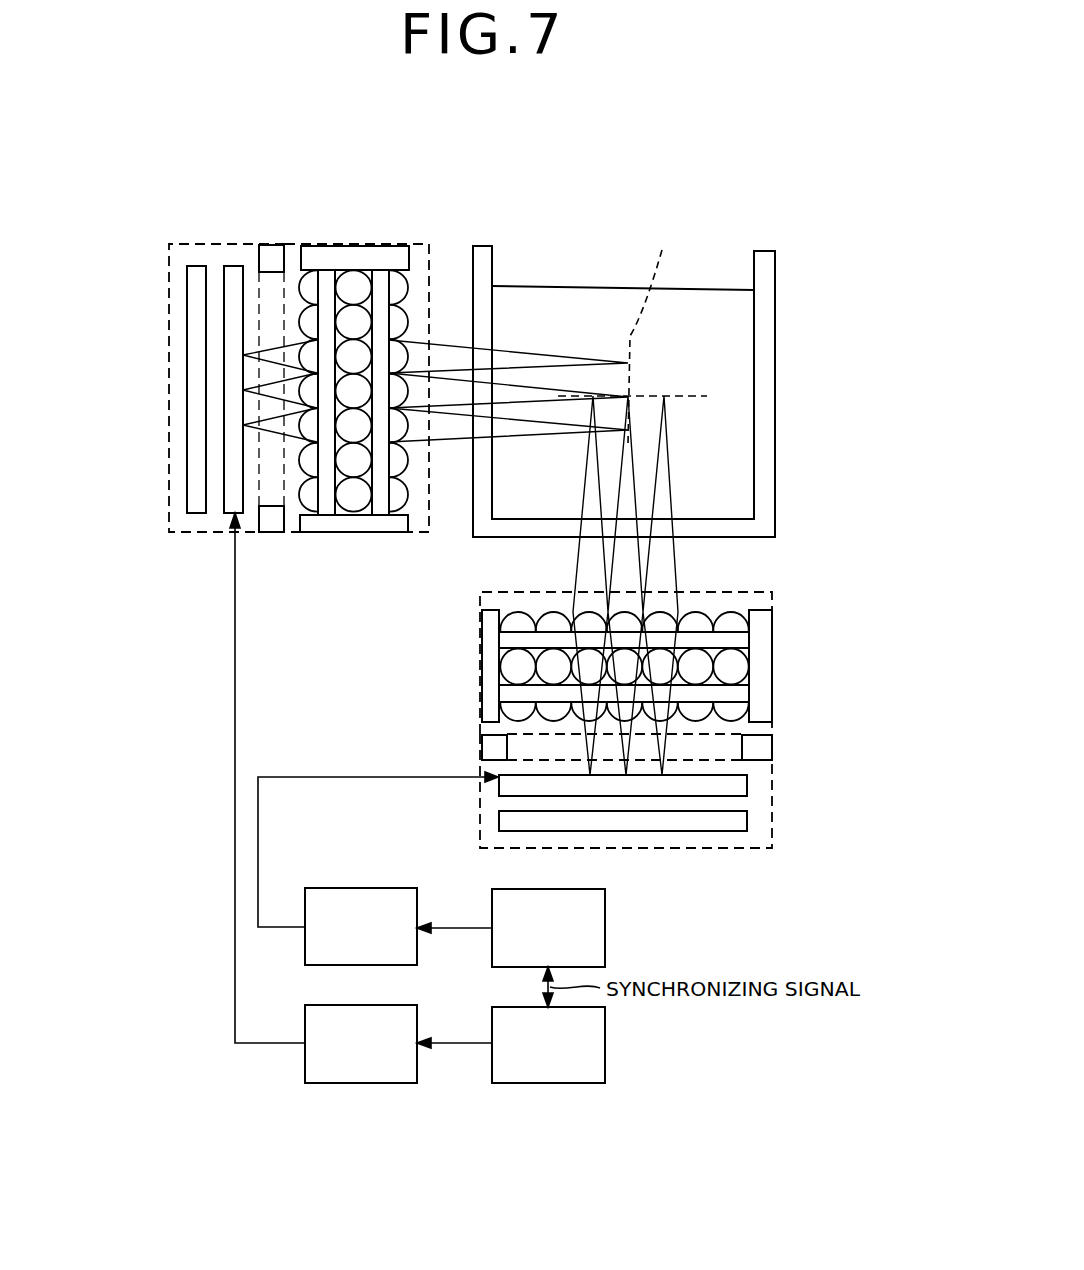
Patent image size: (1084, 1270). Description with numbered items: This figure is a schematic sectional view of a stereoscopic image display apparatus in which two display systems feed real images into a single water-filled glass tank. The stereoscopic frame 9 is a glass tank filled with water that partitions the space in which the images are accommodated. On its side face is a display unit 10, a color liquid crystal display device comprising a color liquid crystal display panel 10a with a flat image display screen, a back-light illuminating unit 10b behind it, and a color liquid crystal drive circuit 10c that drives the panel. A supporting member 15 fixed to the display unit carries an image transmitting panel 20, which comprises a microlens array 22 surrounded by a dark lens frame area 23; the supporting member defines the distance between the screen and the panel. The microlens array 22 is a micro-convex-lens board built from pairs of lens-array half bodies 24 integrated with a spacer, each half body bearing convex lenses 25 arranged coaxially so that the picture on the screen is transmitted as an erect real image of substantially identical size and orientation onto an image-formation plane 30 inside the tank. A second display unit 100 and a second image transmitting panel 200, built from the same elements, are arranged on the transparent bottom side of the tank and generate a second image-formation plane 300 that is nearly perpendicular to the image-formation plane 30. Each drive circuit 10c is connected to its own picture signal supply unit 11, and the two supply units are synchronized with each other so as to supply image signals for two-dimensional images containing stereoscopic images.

The stereoscopic frame 9 is at (776, 289).
The display unit 10 is at (167, 285).
The color liquid crystal display panel 10a is at (232, 267).
The back-light illuminating unit 10b is at (197, 409).
The color liquid crystal drive circuit 10c is at (375, 888).
The picture signal supply unit 11 is at (607, 915).
The supporting member 15 is at (272, 245).
The image transmitting panel 20 is at (422, 535).
The microlens array 22 is at (527, 464).
The lens frame area 23 is at (312, 248).
The lens-array half body 24 is at (380, 271).
The convex lens 25 is at (405, 312).
The image-formation plane 30 is at (657, 332).
The second display unit 100 is at (702, 850).
The second image transmitting panel 200 is at (478, 593).
The second image-formation plane 300 is at (707, 396).